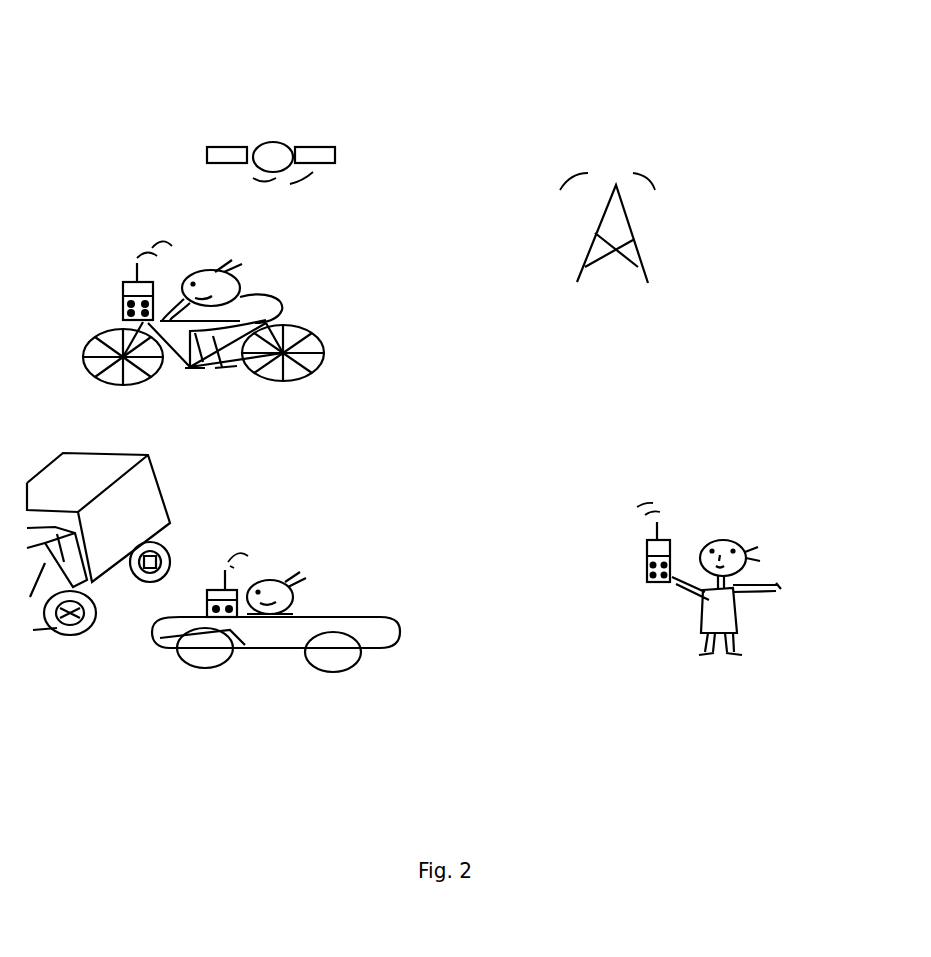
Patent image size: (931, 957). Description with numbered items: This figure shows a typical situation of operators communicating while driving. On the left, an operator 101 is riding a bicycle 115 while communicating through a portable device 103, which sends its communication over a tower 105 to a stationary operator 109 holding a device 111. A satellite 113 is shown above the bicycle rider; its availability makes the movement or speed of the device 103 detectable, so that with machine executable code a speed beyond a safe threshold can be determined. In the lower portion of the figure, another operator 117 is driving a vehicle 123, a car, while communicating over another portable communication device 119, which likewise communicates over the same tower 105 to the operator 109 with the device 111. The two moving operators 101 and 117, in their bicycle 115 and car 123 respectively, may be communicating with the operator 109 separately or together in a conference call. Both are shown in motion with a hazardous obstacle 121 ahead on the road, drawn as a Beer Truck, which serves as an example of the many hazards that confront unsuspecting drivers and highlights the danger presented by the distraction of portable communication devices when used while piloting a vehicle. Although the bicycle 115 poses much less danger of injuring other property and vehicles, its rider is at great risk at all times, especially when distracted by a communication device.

The operator 101 is at (198, 277).
The device 103 is at (124, 293).
The tower 105 is at (597, 232).
The operator 109 is at (728, 537).
The device 111 is at (677, 540).
The satellite 113 is at (258, 140).
The bicycle 115 is at (83, 348).
The operator 117 is at (293, 602).
The portable communication device 119 is at (197, 602).
The hazardous obstacle 121 is at (90, 583).
The vehicle 123 is at (387, 647).